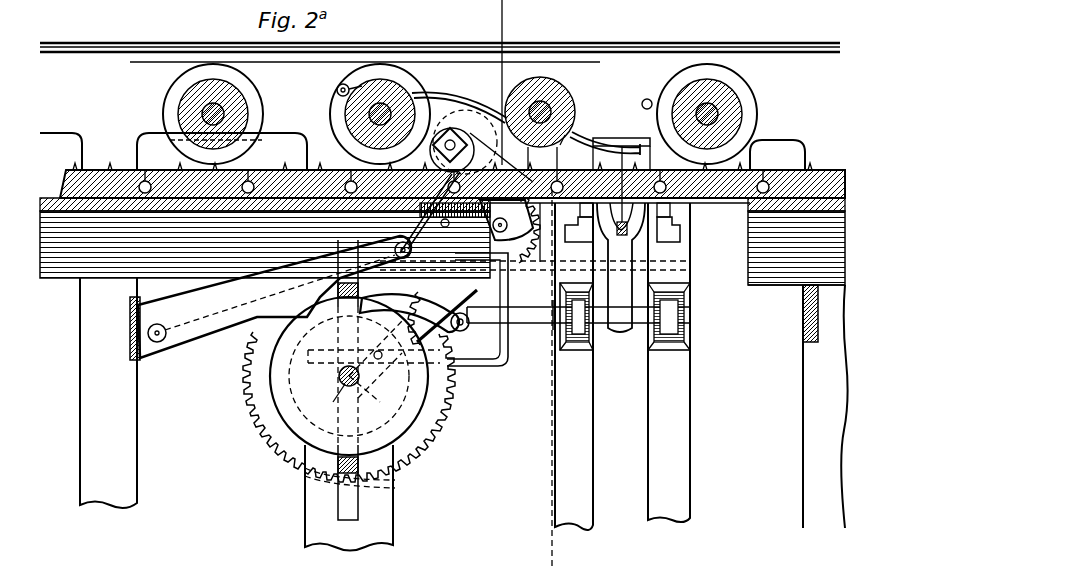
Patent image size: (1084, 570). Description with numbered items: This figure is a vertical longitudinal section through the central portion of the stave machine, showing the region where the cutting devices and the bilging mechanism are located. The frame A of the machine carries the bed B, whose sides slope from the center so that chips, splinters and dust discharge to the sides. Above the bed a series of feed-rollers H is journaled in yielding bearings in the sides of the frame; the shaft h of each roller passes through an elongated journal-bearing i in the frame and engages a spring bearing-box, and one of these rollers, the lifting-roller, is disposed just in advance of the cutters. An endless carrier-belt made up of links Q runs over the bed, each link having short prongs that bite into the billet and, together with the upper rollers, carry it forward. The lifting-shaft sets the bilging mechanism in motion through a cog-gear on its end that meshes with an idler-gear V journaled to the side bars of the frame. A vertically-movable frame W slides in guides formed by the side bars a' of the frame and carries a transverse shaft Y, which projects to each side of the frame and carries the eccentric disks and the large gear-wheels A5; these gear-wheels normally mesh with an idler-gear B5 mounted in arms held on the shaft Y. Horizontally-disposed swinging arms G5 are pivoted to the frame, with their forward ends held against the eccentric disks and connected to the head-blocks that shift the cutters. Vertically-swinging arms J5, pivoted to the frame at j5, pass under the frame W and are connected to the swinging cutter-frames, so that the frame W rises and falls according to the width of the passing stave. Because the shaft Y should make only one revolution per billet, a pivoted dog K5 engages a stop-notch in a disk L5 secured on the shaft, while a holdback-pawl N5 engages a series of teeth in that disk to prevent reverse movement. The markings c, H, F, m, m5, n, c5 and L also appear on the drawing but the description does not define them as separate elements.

The frame A is at (440, 285).
The elongated journal-bearing i is at (183, 93).
The roller shaft h is at (224, 113).
The belt c is at (467, 94).
The feed-roller H is at (605, 109).
The carrier-belt link Q is at (135, 172).
The bed B is at (442, 244).
The pivoted dog K5 is at (270, 298).
The pivot of swinging arms j5 is at (294, 271).
The idler-gear V is at (452, 142).
The swinging arm G5 is at (503, 366).
The cam plate c5 is at (506, 226).
The idler-gear B5 is at (495, 305).
The vertically-swinging arm J5 is at (528, 326).
The bearing n is at (652, 330).
The fork m is at (622, 235).
The guide F is at (562, 147).
The pawl arm m5 is at (418, 301).
The holdback-pawl N5 is at (455, 360).
The large gear-wheel A5 is at (262, 412).
The disk L5 is at (355, 376).
The cam disc portion L is at (385, 407).
The transverse shaft Y is at (338, 393).
The vertically-movable frame W is at (360, 290).
The side bar a' is at (350, 487).